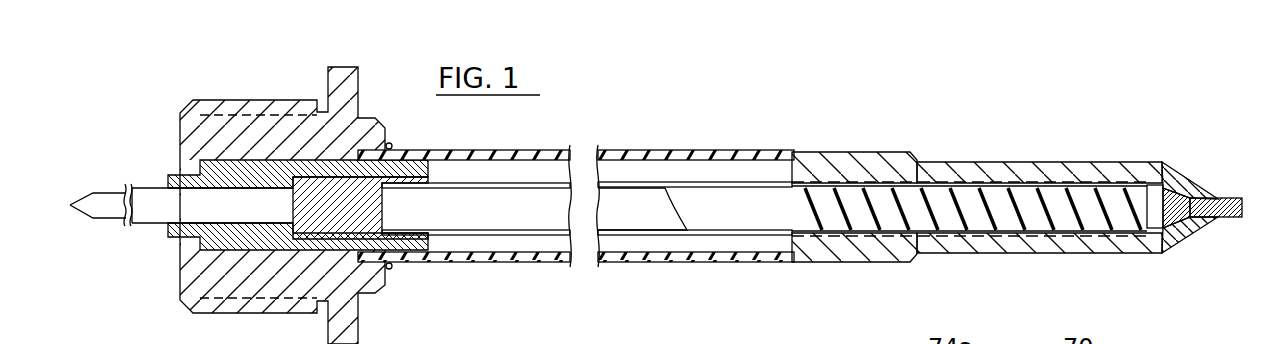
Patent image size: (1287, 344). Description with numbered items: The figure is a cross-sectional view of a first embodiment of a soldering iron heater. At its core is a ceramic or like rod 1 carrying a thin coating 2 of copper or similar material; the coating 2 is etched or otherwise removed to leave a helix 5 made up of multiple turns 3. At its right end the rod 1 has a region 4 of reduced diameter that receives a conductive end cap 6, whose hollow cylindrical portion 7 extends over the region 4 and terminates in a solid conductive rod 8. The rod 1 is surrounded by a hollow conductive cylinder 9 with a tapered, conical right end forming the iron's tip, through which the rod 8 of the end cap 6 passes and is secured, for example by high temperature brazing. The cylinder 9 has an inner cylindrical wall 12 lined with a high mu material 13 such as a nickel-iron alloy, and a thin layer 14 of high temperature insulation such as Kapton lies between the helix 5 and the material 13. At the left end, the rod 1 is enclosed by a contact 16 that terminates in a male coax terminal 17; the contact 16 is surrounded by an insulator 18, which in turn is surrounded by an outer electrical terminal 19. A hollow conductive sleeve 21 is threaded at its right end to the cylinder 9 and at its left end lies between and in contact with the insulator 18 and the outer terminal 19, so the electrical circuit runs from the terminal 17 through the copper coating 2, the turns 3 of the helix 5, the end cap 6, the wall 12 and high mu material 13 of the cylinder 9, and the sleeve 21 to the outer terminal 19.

The rod 1 is at (543, 200).
The coating 2 is at (535, 228).
The turns 3 is at (870, 198).
The region of reduced diameter 4 is at (1168, 178).
The helix 5 is at (786, 207).
The conductive end cap 6 is at (1182, 202).
The hollow cylindrical portion 7 is at (1162, 250).
The solid conductive rod 8 is at (1263, 200).
The hollow conductive cylinder 9 is at (1047, 252).
The inner cylindrical wall 12 is at (923, 233).
The high mu material 13 is at (990, 235).
The thin layer of high temperature insulation 14 is at (1098, 233).
The contact 16 is at (417, 257).
The male coax terminal 17 is at (110, 200).
The insulator 18 is at (182, 166).
The outer electrical terminal 19 is at (193, 287).
The hollow conductive sleeve 21 is at (675, 263).